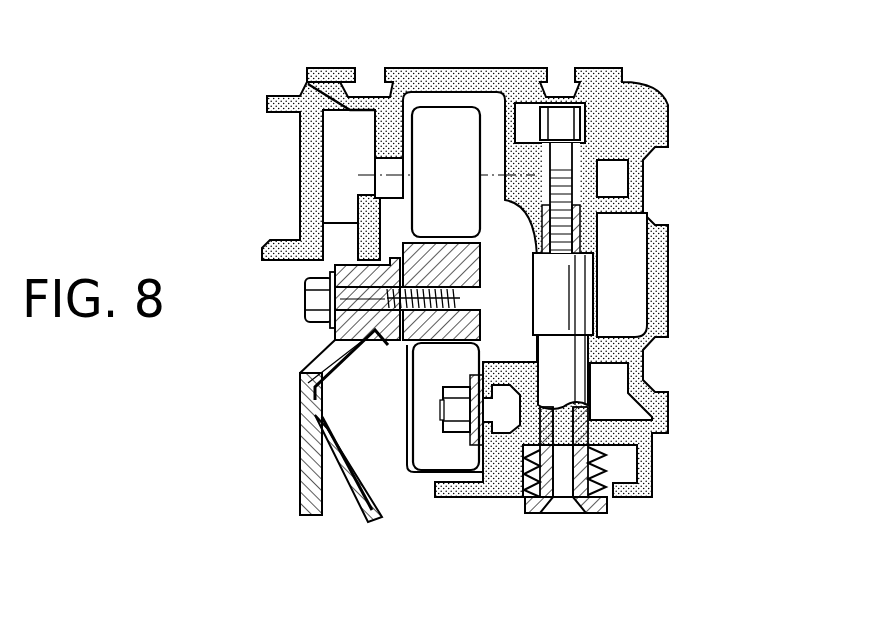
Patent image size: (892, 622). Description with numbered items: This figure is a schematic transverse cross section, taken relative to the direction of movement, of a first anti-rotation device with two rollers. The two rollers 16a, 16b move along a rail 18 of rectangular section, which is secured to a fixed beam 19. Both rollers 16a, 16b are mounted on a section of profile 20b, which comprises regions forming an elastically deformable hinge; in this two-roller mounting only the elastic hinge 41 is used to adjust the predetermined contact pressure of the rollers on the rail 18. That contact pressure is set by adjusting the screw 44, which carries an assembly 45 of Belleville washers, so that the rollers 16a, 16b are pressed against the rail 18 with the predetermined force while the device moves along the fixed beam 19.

The elastic hinge 41 is at (307, 82).
The roller 16a is at (455, 142).
The roller 16b is at (435, 460).
The rail 18 is at (440, 252).
The fixed beam 19 is at (300, 437).
The section of profile 20b is at (668, 221).
The screw 44 is at (612, 512).
The assembly of Belleville washers 45 is at (525, 470).